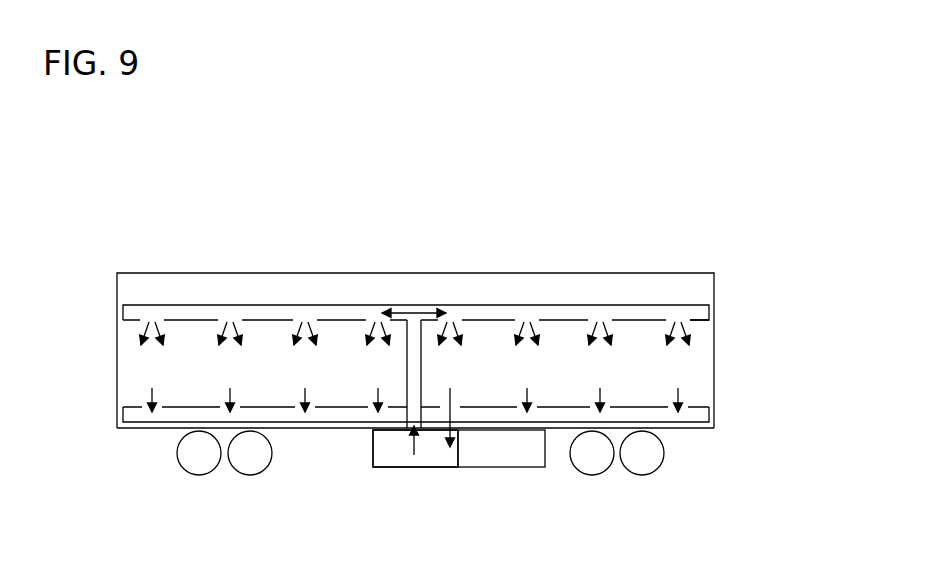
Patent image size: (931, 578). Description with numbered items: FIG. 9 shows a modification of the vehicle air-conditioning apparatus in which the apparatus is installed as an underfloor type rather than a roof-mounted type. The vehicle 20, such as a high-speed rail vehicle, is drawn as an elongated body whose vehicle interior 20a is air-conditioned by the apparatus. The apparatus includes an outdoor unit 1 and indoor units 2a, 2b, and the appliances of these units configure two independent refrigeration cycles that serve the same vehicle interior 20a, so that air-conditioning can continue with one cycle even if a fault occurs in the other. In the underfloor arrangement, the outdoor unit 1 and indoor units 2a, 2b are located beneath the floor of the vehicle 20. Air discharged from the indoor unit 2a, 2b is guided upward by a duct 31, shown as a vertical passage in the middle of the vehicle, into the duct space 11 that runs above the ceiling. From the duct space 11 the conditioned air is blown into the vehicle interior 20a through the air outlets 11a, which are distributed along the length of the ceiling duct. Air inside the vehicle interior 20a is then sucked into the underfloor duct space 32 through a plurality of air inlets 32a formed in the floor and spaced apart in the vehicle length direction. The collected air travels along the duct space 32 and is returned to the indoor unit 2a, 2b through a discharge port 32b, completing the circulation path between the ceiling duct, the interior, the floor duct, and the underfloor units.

The outdoor unit 1 is at (520, 468).
The indoor unit 2a is at (406, 458).
The indoor unit 2b is at (400, 488).
The duct space 11 is at (710, 313).
The air outlets 11a is at (151, 324).
The vehicle 20 is at (714, 352).
The vehicle interior 20a is at (695, 386).
The duct 31 is at (422, 365).
The duct space 32 is at (117, 410).
The air inlets 32a is at (158, 396).
The discharge port 32b is at (452, 412).